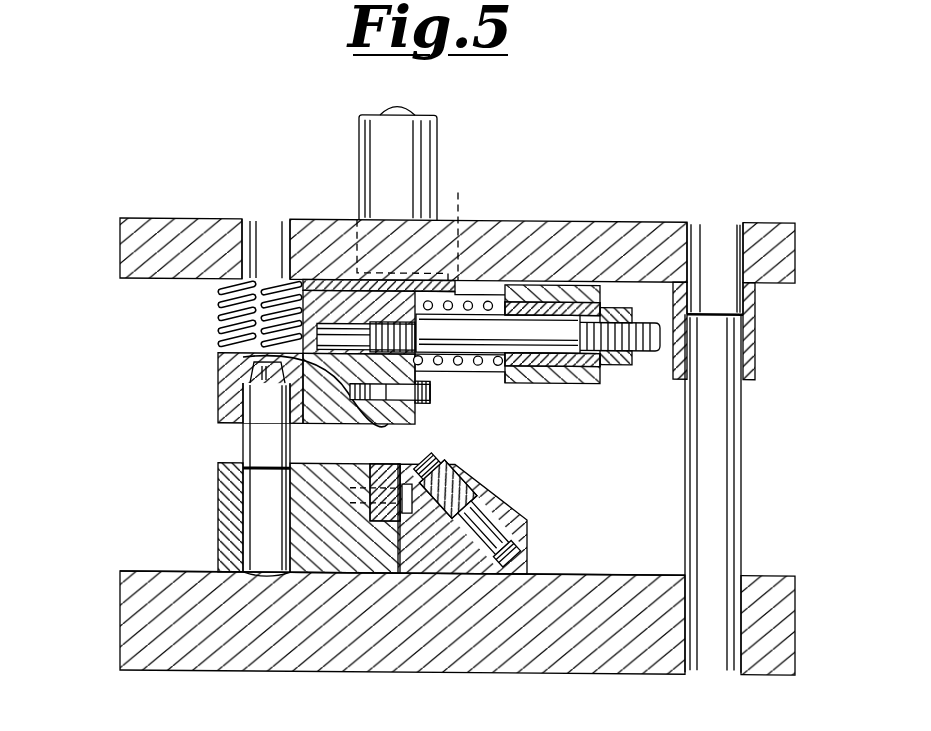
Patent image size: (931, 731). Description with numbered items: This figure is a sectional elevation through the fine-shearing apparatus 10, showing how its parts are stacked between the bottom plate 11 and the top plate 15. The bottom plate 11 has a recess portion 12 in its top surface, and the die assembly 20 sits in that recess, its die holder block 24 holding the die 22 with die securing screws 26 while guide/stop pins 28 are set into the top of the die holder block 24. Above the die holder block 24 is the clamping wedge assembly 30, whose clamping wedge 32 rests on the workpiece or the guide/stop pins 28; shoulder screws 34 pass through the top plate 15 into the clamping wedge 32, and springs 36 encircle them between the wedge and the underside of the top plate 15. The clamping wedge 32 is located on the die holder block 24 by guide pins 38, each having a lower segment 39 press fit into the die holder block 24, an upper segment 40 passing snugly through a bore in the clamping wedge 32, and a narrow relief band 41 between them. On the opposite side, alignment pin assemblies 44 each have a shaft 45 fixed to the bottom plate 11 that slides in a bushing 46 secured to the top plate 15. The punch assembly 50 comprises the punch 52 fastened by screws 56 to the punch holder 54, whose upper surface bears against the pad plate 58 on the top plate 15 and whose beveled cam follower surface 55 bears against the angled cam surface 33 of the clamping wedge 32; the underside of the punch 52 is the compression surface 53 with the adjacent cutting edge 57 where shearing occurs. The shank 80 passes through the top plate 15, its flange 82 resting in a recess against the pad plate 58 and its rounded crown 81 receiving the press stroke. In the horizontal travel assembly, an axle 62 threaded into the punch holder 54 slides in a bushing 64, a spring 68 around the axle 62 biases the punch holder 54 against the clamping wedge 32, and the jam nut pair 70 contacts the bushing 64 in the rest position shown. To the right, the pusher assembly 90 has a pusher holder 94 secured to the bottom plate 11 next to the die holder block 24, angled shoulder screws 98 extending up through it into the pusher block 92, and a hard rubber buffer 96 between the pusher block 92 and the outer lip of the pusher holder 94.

The apparatus 10 is at (658, 200).
The bottom plate 11 is at (562, 638).
The recess portion 12 is at (308, 575).
The top plate 15 is at (594, 252).
The die assembly 20 is at (212, 521).
The die 22 is at (385, 467).
The die holder block 24 is at (310, 522).
The die securing screws 26 is at (403, 510).
The guide/stop pins 28 is at (350, 465).
The clamping wedge assembly 30 is at (212, 412).
The clamping wedge 32 is at (310, 402).
The angled cam surface 33 is at (305, 361).
The shoulder screws 34 is at (224, 313).
The springs 36 is at (222, 322).
The guide pins 38 is at (236, 450).
The lower segment 39 is at (255, 492).
The upper segment 40 is at (255, 430).
The relief band 41 is at (245, 470).
The alignment pin assemblies 44 is at (758, 432).
The shaft 45 is at (745, 483).
The bushing 46 is at (752, 330).
The punch assembly 50 is at (326, 272).
The punch 52 is at (413, 412).
The compression surface 53 is at (417, 423).
The punch holder 54 is at (420, 363).
The cam follower surface 55 is at (316, 384).
The screws 56 is at (430, 388).
The cutting edge 57 is at (383, 415).
The pad plate 58 is at (480, 296).
The axle 62 is at (540, 342).
The bushing 64 is at (602, 368).
The spring 68 is at (470, 300).
The jam nut pair 70 is at (612, 300).
The shank 80 is at (384, 153).
The rounded crown 81 is at (406, 105).
The flange 82 is at (461, 198).
The pusher assembly 90 is at (523, 494).
The pusher block 92 is at (447, 460).
The pusher holder 94 is at (507, 527).
The buffer 96 is at (497, 480).
The shoulder screws 98 is at (518, 545).